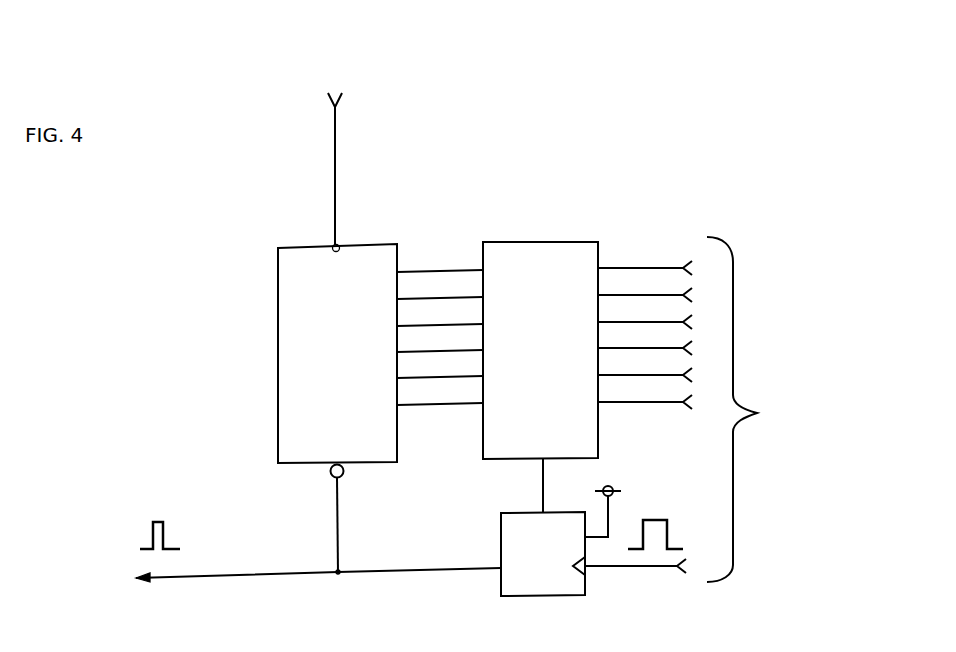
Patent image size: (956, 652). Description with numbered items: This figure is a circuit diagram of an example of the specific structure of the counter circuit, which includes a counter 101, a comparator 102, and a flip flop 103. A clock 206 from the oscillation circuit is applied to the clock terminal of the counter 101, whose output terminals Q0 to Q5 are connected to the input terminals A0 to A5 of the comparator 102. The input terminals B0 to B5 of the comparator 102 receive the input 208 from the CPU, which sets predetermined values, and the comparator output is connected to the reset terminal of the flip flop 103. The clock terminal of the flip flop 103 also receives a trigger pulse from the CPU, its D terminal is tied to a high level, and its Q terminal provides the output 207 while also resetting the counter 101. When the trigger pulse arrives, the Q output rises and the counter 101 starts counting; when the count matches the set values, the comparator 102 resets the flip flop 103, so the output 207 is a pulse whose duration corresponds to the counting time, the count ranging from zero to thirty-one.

The counter 101 is at (277, 355).
The comparator 102 is at (555, 241).
The flip flop 103 is at (501, 541).
The clock 206 is at (327, 138).
The output 207 is at (269, 533).
The input from CPU 208 is at (728, 409).